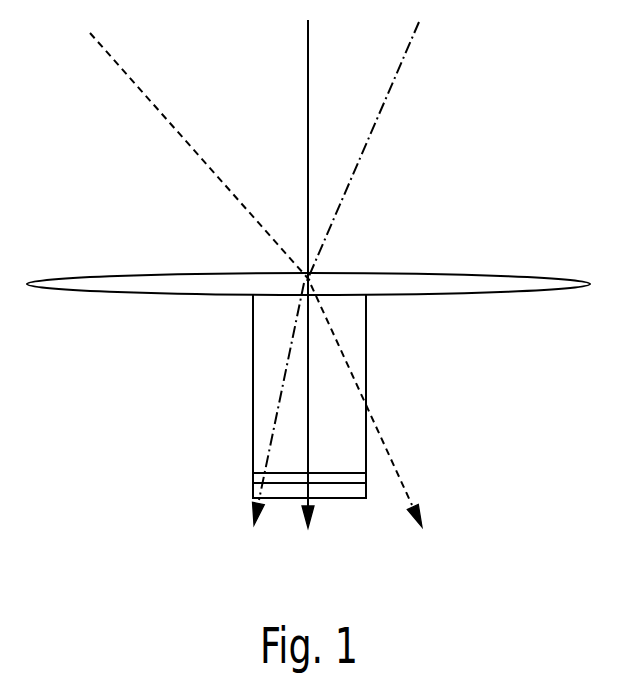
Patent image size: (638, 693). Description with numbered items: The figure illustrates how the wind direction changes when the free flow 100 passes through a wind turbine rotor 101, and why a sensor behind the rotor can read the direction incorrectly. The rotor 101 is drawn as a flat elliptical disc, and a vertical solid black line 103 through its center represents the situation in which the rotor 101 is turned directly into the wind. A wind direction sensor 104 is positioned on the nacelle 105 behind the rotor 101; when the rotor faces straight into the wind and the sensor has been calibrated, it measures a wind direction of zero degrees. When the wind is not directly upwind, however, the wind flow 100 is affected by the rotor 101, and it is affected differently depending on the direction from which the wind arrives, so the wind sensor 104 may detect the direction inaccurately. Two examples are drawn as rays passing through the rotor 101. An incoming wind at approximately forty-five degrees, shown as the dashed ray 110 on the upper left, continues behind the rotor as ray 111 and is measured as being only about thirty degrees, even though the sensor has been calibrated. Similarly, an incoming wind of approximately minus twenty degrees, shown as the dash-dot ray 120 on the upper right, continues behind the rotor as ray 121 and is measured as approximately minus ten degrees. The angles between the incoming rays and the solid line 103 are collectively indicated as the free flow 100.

The free flow 100 is at (223, 178).
The wind turbine rotor 101 is at (527, 277).
The solid black line 103 is at (308, 62).
The wind direction sensor 104 is at (335, 480).
The nacelle 105 is at (366, 345).
The incoming wind at approximately 45 degrees 110 is at (132, 80).
The measured wind direction of 30 degrees 111 is at (380, 427).
The incoming wind of approximately -20 degrees 120 is at (397, 77).
The measured wind direction of approximately -10 degrees 121 is at (278, 403).